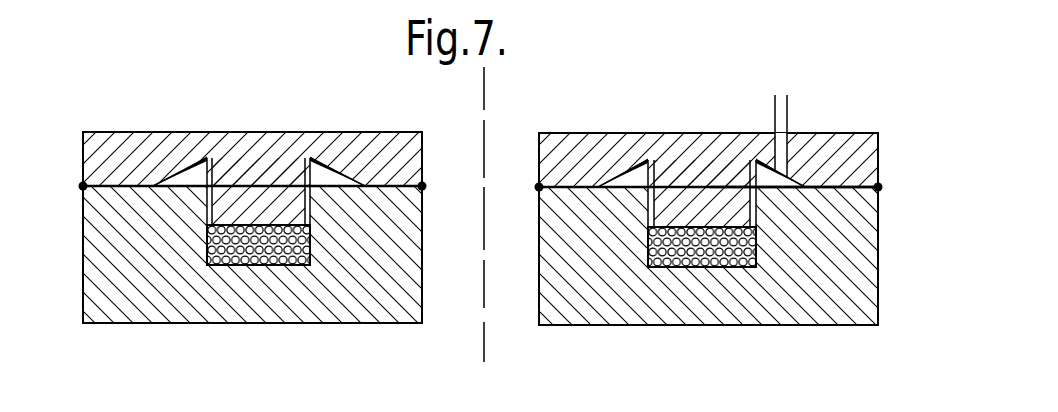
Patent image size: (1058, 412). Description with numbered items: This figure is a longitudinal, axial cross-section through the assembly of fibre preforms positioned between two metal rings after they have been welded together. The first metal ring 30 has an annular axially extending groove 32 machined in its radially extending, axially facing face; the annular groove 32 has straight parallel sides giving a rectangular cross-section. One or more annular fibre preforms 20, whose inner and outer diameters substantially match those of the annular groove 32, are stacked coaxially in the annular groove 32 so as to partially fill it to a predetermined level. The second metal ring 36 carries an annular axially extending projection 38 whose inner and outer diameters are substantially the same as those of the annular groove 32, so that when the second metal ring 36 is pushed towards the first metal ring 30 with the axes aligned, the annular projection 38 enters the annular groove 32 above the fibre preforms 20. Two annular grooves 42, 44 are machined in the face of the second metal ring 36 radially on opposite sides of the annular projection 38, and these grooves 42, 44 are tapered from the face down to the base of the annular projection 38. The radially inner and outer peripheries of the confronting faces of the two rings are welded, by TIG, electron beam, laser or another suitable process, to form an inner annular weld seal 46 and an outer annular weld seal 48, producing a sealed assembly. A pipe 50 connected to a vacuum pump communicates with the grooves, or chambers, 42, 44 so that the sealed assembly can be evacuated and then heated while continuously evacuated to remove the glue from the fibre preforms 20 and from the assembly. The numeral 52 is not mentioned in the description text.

The annular fibre preforms 20 is at (312, 245).
The first metal ring 30 is at (392, 298).
The annular groove 32 is at (312, 222).
The second metal ring 36 is at (410, 150).
The annular projection 38 is at (256, 182).
The annular groove 42 is at (190, 178).
The annular groove 44 is at (322, 172).
The inner annular weld seal 46 is at (539, 187).
The outer annular weld seal 48 is at (876, 186).
The pipe 50 is at (776, 100).
The trench liner 52 is at (750, 187).